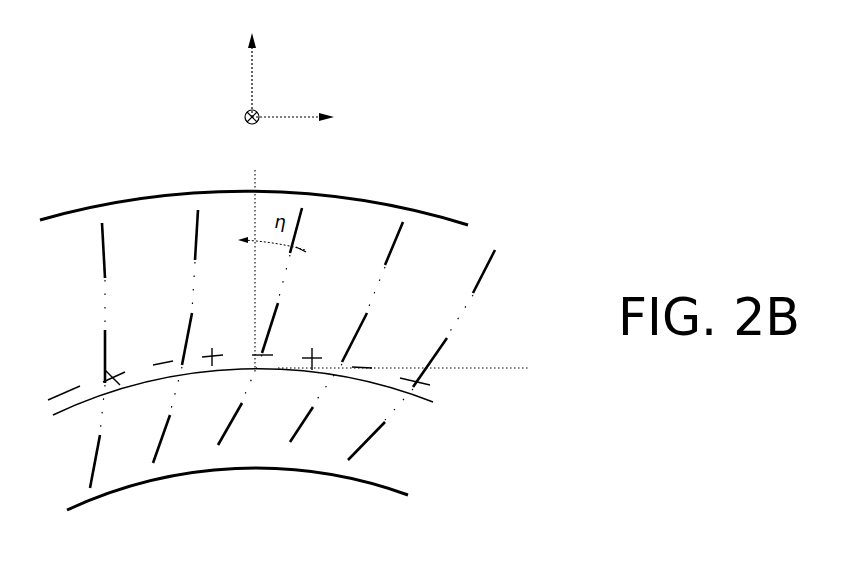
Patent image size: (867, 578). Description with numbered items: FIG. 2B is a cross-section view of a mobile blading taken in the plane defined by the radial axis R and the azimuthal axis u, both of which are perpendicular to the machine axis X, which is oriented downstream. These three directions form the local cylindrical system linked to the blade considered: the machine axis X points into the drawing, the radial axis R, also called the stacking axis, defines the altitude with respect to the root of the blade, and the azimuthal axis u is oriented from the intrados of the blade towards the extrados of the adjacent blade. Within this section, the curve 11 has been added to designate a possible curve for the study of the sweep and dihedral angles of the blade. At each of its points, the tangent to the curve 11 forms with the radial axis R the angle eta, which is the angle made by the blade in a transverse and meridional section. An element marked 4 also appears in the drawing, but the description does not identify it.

The curve 11 is at (302, 229).
The ring 4 is at (470, 188).
The radial axis R is at (254, 63).
The azimuthal axis u is at (304, 117).
The machine axis X is at (241, 117).